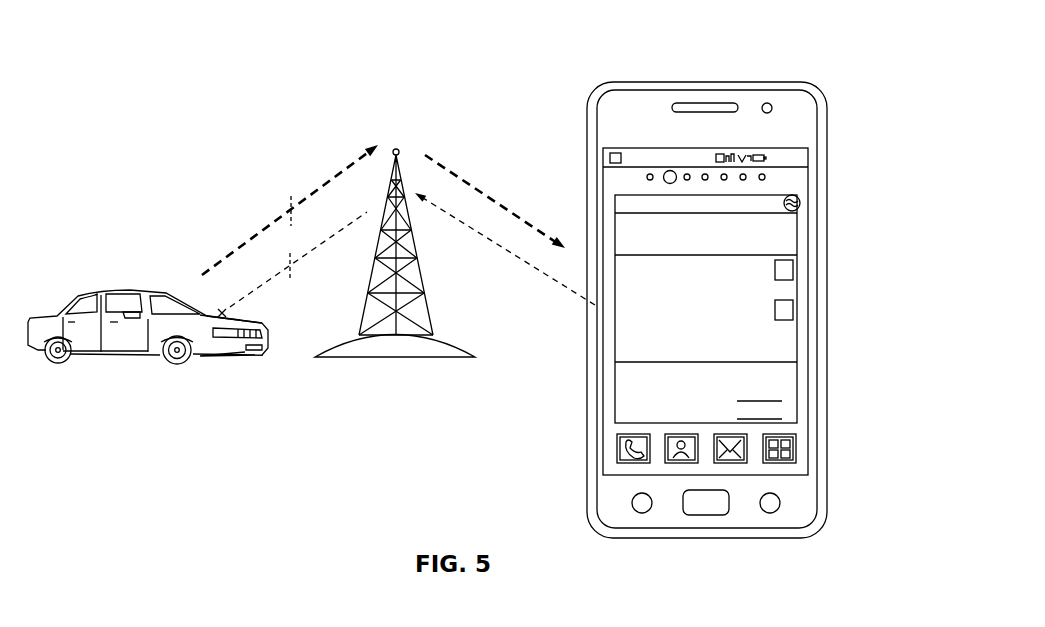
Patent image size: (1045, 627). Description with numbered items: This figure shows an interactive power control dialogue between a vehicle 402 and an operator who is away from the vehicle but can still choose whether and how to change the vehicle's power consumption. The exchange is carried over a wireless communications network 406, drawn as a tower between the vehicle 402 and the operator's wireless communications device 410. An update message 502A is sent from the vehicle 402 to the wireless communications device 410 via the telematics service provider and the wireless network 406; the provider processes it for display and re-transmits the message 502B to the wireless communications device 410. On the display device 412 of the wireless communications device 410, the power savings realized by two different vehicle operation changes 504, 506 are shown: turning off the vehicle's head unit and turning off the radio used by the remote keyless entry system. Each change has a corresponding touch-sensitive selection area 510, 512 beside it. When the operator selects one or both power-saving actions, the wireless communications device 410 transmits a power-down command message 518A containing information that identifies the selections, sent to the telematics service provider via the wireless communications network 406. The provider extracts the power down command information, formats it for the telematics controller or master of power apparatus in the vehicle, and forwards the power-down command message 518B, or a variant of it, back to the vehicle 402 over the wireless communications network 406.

The vehicle 402 is at (92, 345).
The wireless communications network 406 is at (420, 265).
The wireless communications device 410 is at (760, 82).
The display device 412 is at (618, 183).
The update message 502A is at (228, 248).
The re-transmitted message 502B is at (478, 192).
The vehicle operation change 504 is at (623, 275).
The vehicle operation change 506 is at (625, 325).
The touch-sensitive selection area 510 is at (790, 267).
The touch-sensitive selection area 512 is at (790, 310).
The power-down command message 518A is at (535, 272).
The power-down command message 518B is at (318, 252).